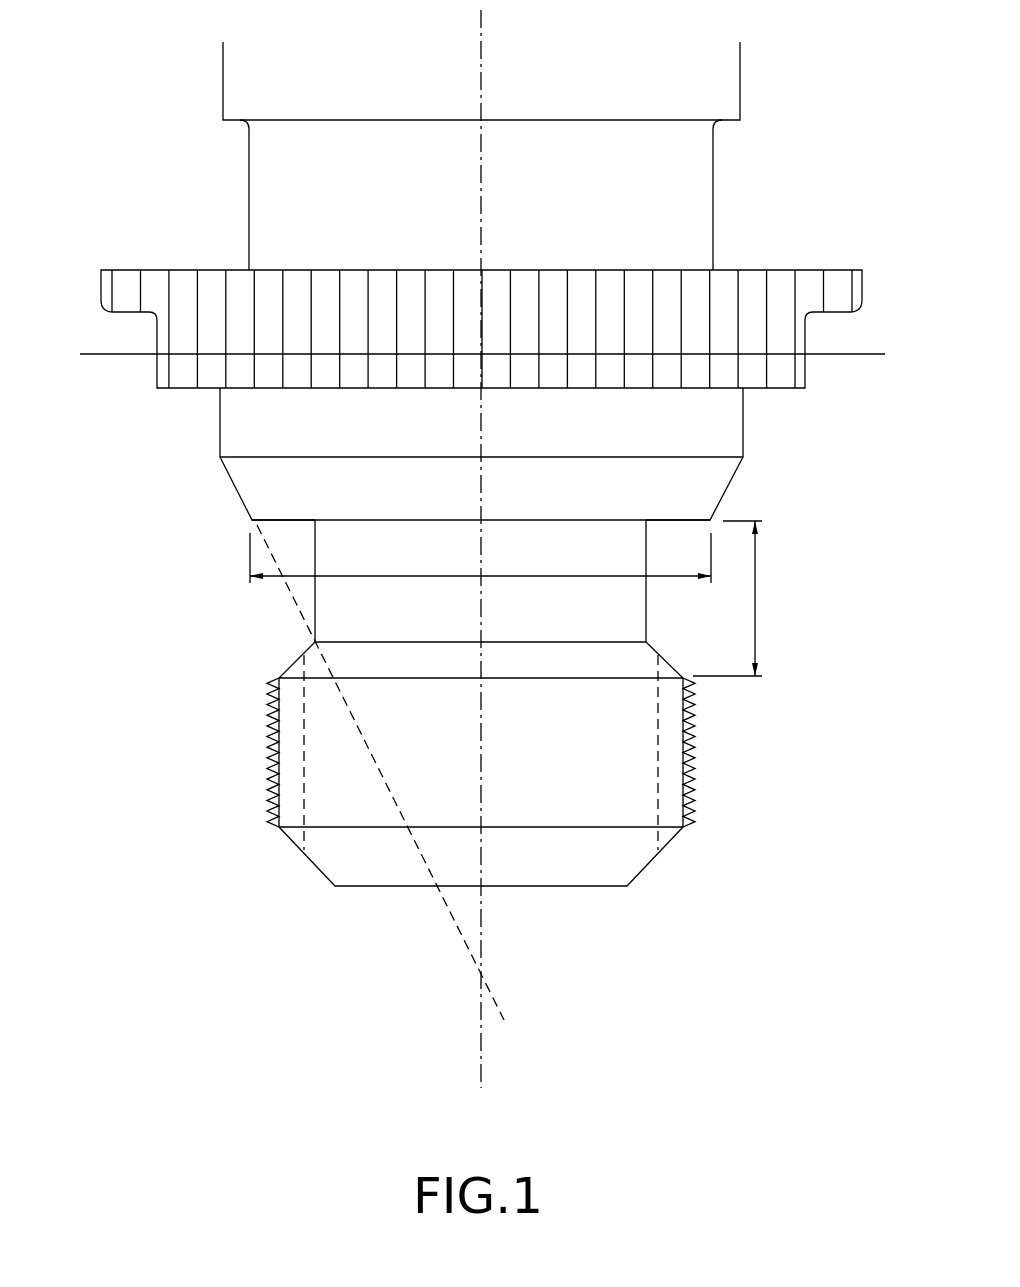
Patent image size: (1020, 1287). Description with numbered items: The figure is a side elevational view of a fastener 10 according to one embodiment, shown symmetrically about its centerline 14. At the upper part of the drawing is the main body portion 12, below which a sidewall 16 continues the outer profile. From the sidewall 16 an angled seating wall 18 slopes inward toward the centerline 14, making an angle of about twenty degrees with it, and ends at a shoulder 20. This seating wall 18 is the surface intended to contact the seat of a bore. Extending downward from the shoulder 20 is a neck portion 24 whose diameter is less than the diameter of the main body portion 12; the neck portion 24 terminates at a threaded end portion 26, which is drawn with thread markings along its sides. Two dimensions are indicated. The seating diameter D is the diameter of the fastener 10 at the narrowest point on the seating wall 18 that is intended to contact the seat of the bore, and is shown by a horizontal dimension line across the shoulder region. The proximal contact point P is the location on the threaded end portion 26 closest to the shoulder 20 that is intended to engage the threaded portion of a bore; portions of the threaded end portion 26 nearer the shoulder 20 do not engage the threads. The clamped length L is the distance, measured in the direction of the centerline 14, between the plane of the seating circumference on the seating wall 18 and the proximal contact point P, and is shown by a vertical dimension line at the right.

The fastener 10 is at (137, 213).
The main body portion 12 is at (697, 222).
The centerline 14 is at (482, 168).
The sidewall 16 is at (743, 422).
The angled seating wall 18 is at (730, 490).
The shoulder 20 is at (277, 522).
The neck portion 24 is at (315, 612).
The threaded end portion 26 is at (742, 762).
The seating diameter D is at (480, 558).
The clamped length L is at (738, 598).
The proximal contact point P is at (693, 676).